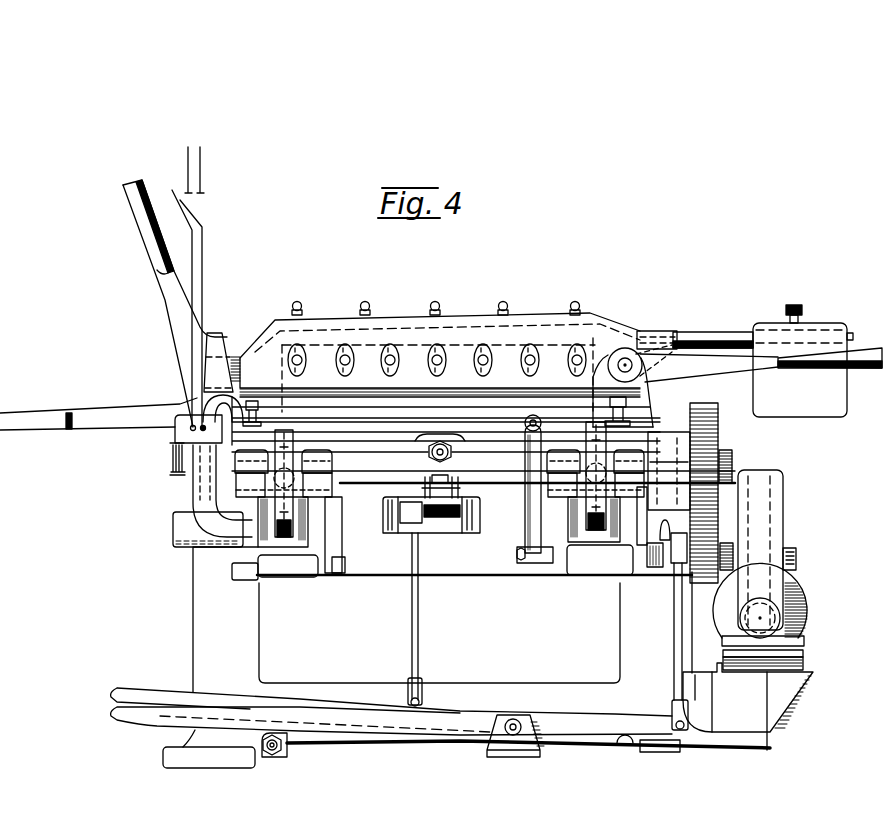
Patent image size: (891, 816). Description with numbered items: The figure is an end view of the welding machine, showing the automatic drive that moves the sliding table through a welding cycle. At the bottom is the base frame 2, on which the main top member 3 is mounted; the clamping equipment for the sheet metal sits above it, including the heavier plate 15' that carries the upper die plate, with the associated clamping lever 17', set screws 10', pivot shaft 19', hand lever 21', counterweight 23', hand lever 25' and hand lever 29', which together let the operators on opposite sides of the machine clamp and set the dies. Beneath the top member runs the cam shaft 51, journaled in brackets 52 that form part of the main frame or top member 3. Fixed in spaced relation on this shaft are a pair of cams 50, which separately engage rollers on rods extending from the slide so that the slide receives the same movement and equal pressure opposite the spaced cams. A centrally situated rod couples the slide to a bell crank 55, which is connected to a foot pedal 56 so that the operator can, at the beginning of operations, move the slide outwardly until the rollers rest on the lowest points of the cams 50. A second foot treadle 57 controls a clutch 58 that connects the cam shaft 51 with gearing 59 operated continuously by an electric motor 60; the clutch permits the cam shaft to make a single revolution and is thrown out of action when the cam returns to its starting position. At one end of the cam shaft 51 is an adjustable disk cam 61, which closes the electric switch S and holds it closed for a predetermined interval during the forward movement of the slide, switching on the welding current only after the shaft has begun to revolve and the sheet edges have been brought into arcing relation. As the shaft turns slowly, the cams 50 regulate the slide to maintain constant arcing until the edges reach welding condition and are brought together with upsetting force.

The base frame 2 is at (193, 620).
The main top member 3 is at (172, 532).
The electric switch S is at (172, 448).
The manifold 10' is at (440, 350).
The heavier plate 15' is at (446, 411).
The cylinder ports 17' is at (437, 333).
The rocker 19' is at (635, 363).
The lever blade 21' is at (761, 364).
The lever box 23' is at (803, 373).
The control lever 25' is at (170, 287).
The blade 29' is at (98, 403).
The cams 50 is at (285, 540).
The cam shaft 51 is at (378, 471).
The brackets 52 is at (241, 576).
The bell crank 55 is at (423, 530).
The foot pedal 56 is at (145, 690).
The second foot treadle 57 is at (130, 723).
The clutch 58 is at (668, 432).
The gearing 59 is at (722, 442).
The electric motor 60 is at (797, 597).
The adjustable disk cam 61 is at (197, 489).